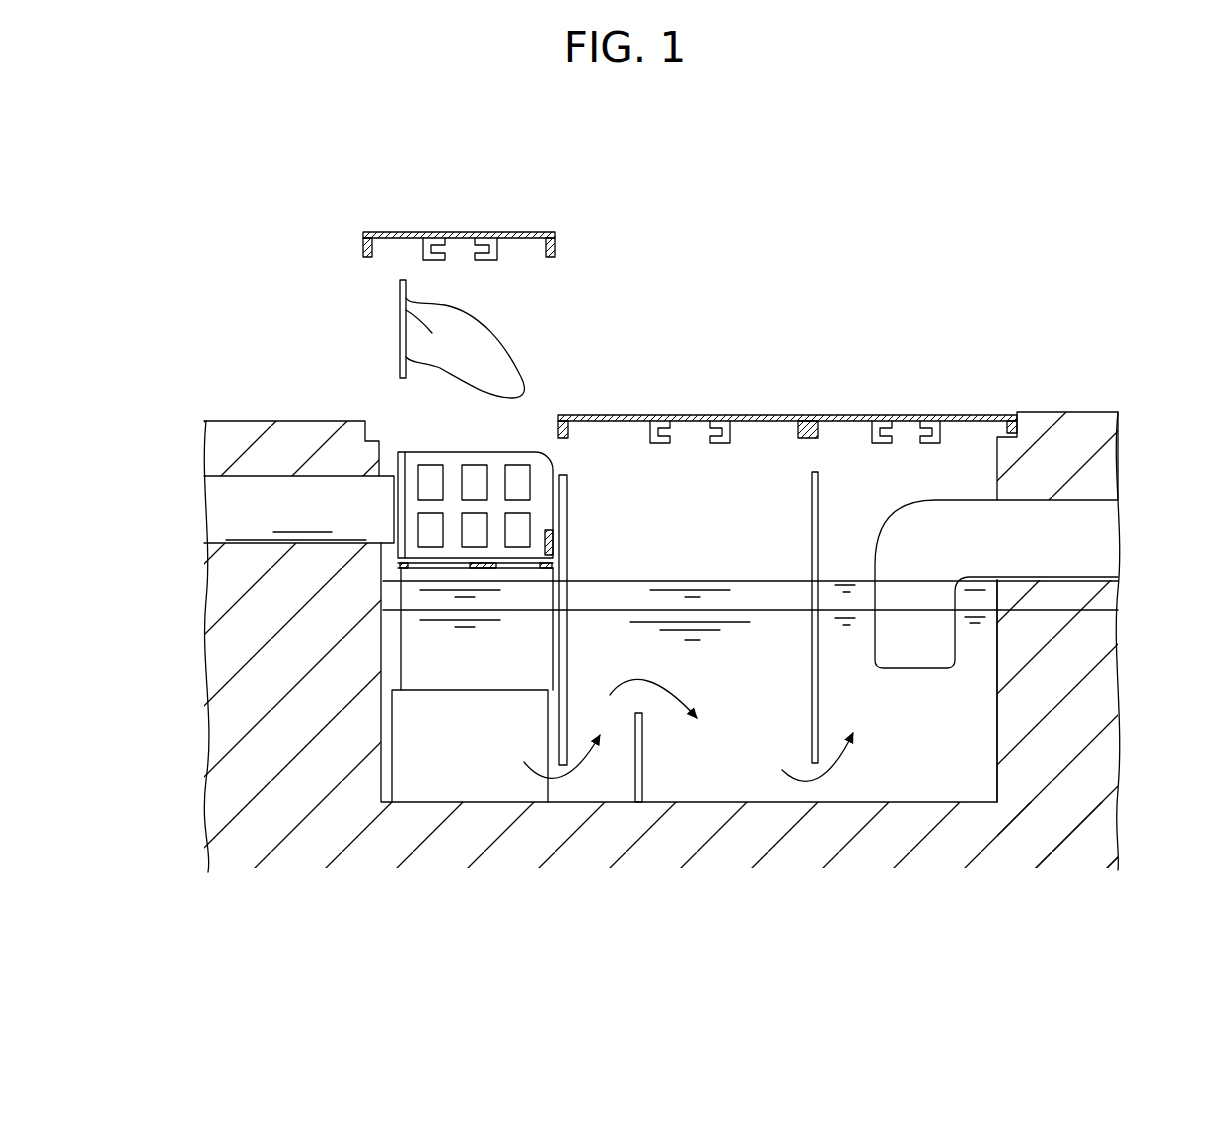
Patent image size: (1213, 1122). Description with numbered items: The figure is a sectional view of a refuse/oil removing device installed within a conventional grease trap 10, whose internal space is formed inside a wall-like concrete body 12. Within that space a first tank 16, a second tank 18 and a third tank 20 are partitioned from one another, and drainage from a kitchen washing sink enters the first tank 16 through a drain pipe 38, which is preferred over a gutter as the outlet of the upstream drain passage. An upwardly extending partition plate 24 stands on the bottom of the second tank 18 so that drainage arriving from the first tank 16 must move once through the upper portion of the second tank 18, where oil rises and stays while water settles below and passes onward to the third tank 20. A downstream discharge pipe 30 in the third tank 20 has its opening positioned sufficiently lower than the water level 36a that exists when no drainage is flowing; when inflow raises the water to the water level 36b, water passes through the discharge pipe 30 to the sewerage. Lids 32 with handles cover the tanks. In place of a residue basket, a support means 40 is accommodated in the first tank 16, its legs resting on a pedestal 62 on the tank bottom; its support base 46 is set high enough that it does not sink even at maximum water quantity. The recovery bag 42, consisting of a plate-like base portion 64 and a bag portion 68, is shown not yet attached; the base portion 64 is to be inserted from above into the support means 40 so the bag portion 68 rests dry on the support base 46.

The grease trap 10 is at (957, 388).
The body 12 is at (1072, 445).
The first tank 16 is at (385, 656).
The second tank 18 is at (714, 782).
The third tank 20 is at (911, 783).
The partition plate 24 is at (642, 757).
The downstream discharge pipe 30 is at (915, 642).
The lid 32 is at (525, 232).
The water level 36a is at (612, 612).
The water level 36b is at (683, 578).
The drain pipe 38 is at (228, 509).
The support means 40 is at (530, 440).
The recovery bag 42 is at (372, 264).
The support base 46 is at (488, 572).
The pedestal 62 is at (462, 755).
The base portion 64 is at (402, 343).
The bag portion 68 is at (432, 333).